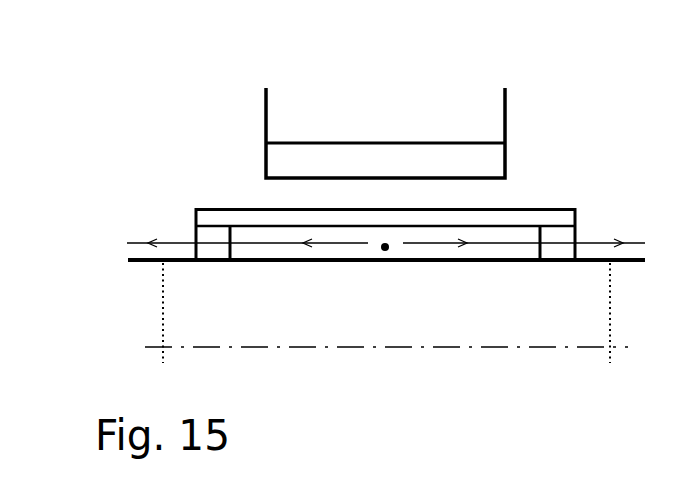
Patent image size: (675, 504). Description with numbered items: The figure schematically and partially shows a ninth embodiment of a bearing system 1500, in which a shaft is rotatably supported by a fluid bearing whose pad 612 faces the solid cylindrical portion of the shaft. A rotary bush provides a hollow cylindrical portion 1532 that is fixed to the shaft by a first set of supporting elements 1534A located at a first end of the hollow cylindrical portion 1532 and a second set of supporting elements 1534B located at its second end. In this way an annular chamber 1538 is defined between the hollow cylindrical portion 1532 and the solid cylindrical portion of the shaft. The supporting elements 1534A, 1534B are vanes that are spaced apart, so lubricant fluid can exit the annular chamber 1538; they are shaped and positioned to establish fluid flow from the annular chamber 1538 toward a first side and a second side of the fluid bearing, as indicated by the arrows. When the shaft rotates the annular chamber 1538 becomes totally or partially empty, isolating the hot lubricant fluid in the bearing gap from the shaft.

The bearing system 1500 is at (223, 101).
The pad of the fluid bearing 612 is at (335, 158).
The hollow cylindrical portion 1532 is at (413, 218).
The first set of supporting elements 1534A is at (213, 250).
The second set of supporting elements 1534B is at (558, 250).
The annular chamber 1538 is at (385, 253).